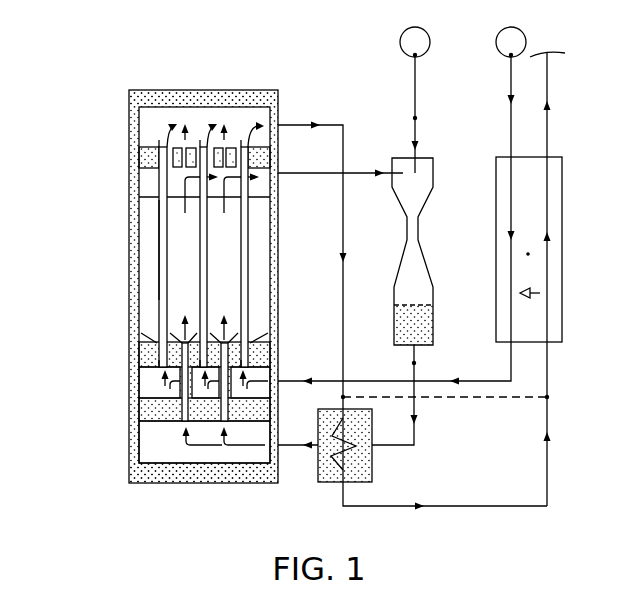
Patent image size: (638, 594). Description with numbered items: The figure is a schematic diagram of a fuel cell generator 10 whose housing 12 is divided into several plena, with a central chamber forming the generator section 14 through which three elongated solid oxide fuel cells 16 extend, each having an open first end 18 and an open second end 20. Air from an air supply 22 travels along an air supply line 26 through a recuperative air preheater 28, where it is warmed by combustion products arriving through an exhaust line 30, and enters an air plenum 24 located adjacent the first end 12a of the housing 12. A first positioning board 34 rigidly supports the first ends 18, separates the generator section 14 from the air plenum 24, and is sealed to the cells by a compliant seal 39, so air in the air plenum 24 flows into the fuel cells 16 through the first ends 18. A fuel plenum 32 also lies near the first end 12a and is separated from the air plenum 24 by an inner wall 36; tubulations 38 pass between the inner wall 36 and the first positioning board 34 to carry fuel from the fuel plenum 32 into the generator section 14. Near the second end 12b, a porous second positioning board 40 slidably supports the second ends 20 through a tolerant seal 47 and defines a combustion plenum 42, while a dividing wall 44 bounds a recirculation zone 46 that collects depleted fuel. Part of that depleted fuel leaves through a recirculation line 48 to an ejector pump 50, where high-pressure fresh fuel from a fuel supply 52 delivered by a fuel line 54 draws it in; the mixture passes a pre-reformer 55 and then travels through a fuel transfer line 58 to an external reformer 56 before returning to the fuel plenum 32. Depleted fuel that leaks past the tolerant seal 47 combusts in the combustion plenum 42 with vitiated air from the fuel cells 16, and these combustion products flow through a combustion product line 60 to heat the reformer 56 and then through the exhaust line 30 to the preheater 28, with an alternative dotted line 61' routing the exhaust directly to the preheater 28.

The fuel cell generator 10 is at (138, 71).
The housing 12 is at (254, 78).
The first end of the housing 12a is at (128, 473).
The second end of the housing 12b is at (135, 97).
The generator section 14 is at (150, 295).
The fuel cells 16 is at (243, 253).
The first end 18 is at (244, 348).
The second end 20 is at (245, 148).
The air supply 22 is at (498, 38).
The air plenum 24 is at (148, 383).
The air supply line 26 is at (317, 380).
The recuperative air preheater 28 is at (562, 262).
The exhaust line 30 is at (550, 422).
The fuel plenum 32 is at (148, 447).
The first positioning board 34 is at (142, 355).
The inner wall 36 is at (148, 412).
The tubulations 38 is at (229, 392).
The seal 39 is at (157, 343).
The second positioning board 40 is at (143, 163).
The combustion plenum 42 is at (145, 122).
The dividing wall 44 is at (262, 199).
The recirculation zone 46 is at (145, 190).
The tolerant seal 47 is at (172, 157).
The recirculation line 48 is at (362, 172).
The ejector pump 50 is at (433, 265).
The fuel supply 52 is at (403, 38).
The fuel line 54 is at (417, 88).
The pre-reformer 55 is at (433, 325).
The external reformer 56 is at (372, 462).
The fuel transfer line 58 is at (414, 402).
The combustion product line 60 is at (334, 124).
The line 61' is at (445, 420).